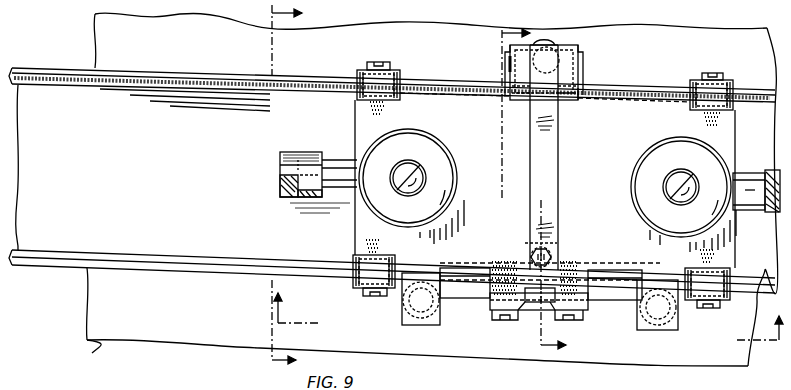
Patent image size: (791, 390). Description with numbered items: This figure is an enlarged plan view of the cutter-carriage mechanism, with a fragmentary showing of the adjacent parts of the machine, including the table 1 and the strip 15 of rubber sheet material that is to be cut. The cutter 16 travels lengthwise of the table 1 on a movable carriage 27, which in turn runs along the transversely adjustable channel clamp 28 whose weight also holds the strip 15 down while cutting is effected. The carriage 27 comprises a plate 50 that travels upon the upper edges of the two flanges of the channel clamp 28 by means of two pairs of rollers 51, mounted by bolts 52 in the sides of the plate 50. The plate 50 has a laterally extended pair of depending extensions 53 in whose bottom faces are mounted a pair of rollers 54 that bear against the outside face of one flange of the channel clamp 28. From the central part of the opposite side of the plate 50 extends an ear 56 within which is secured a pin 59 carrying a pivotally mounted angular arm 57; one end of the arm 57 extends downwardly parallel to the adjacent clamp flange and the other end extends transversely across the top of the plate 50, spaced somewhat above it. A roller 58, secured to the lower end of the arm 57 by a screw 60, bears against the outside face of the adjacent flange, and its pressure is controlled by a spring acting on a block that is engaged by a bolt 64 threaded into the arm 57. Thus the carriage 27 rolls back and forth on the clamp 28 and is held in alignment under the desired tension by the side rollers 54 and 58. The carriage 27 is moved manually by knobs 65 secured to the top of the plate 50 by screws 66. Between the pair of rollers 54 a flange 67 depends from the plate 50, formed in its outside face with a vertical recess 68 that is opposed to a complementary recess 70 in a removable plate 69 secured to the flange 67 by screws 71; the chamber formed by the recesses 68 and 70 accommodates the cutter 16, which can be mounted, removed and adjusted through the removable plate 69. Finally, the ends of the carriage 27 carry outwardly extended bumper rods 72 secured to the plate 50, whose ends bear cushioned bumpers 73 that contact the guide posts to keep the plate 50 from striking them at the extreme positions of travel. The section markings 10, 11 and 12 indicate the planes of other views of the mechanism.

The table 1 is at (104, 343).
The section line 10- 10 is at (518, 190).
The section line 11- 11 is at (528, 316).
The section line 12- 12 is at (281, 192).
The strip 15 is at (232, 342).
The cutter 16 is at (510, 318).
The carriage 27 is at (598, 212).
The channel clamp 28 is at (45, 72).
The plate 50 is at (545, 178).
The rollers 51 is at (357, 76).
The bolts 52 is at (376, 62).
The depending extensions 53 is at (424, 325).
The rollers 54 is at (404, 304).
The ear 56 is at (580, 50).
The angular arm 57 is at (530, 137).
The roller 58 is at (546, 46).
The pin 59 is at (510, 60).
The screw 60 is at (556, 40).
The bolt 64 is at (537, 242).
The knobs 65 is at (456, 168).
The screws 66 is at (416, 164).
The flange 67 is at (492, 286).
The vertical recess 68 is at (533, 254).
The removable plate 69 is at (497, 306).
The recess 70 is at (560, 322).
The screws 71 is at (538, 318).
The bumper rods 72 is at (324, 160).
The cushioned bumpers 73 is at (280, 190).